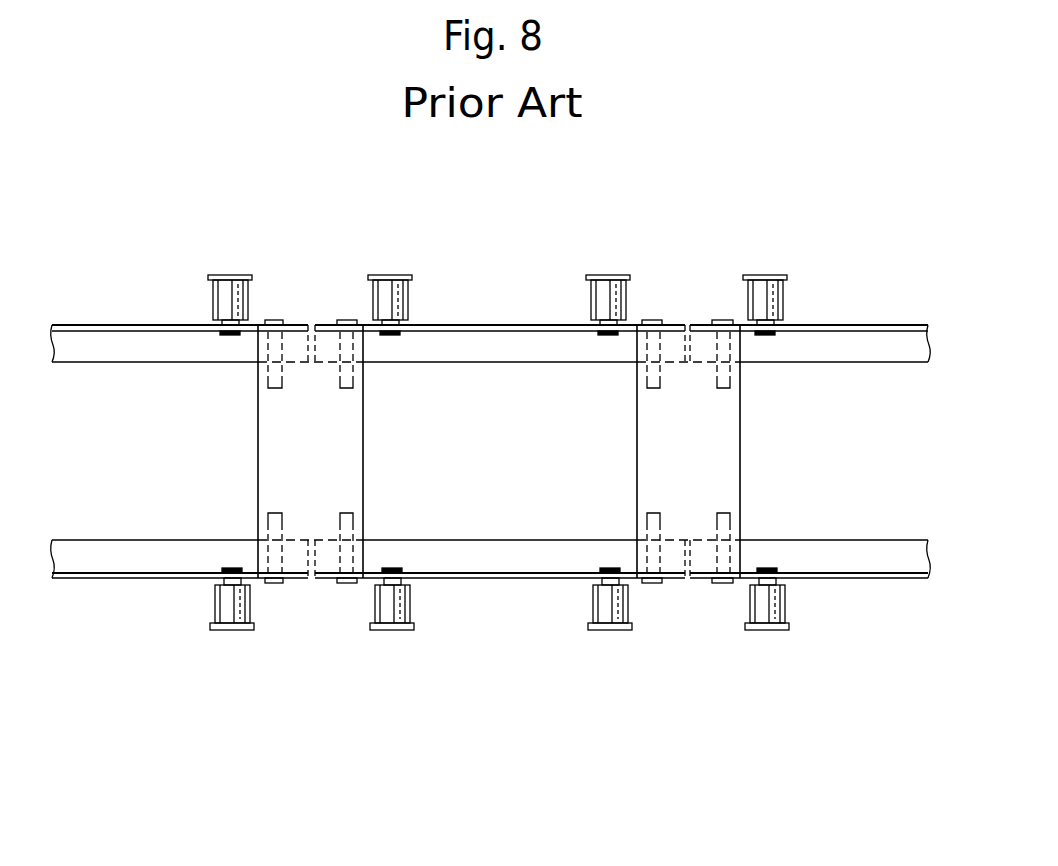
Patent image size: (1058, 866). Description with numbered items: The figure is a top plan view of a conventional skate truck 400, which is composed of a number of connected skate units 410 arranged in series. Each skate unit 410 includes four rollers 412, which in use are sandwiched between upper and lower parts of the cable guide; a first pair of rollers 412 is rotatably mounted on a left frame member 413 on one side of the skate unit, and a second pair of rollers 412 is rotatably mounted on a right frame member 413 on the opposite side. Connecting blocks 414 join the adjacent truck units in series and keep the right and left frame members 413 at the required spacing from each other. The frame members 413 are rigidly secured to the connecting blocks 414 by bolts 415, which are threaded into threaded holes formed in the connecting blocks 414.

The skate truck 400 is at (503, 705).
The skate unit 410 is at (307, 202).
The roller 412 is at (220, 297).
The frame member 413 is at (97, 342).
The connecting block 414 is at (352, 447).
The bolt 415 is at (345, 321).